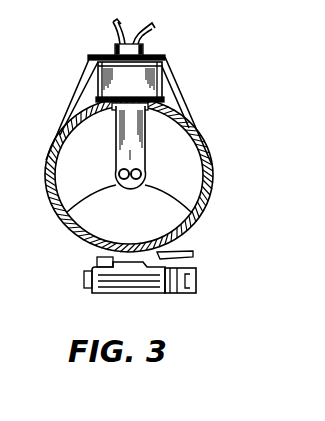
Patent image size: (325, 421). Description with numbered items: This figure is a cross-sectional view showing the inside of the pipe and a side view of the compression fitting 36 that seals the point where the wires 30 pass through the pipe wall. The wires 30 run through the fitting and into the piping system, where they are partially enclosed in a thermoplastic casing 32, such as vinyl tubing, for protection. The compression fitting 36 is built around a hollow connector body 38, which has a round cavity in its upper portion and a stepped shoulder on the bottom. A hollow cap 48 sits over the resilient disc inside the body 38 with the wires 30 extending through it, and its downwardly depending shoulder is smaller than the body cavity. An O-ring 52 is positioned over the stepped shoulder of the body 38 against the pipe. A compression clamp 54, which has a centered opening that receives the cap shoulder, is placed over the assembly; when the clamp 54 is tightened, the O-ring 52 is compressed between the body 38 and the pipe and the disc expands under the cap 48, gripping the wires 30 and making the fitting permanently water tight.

The wires 30 is at (117, 21).
The thermoplastic casing 32 is at (145, 146).
The compression fitting 36 is at (90, 76).
The hollow connector body 38 is at (162, 89).
The hollow cap 48 is at (143, 50).
The O-ring 52 is at (100, 104).
The compression clamp 54 is at (196, 280).